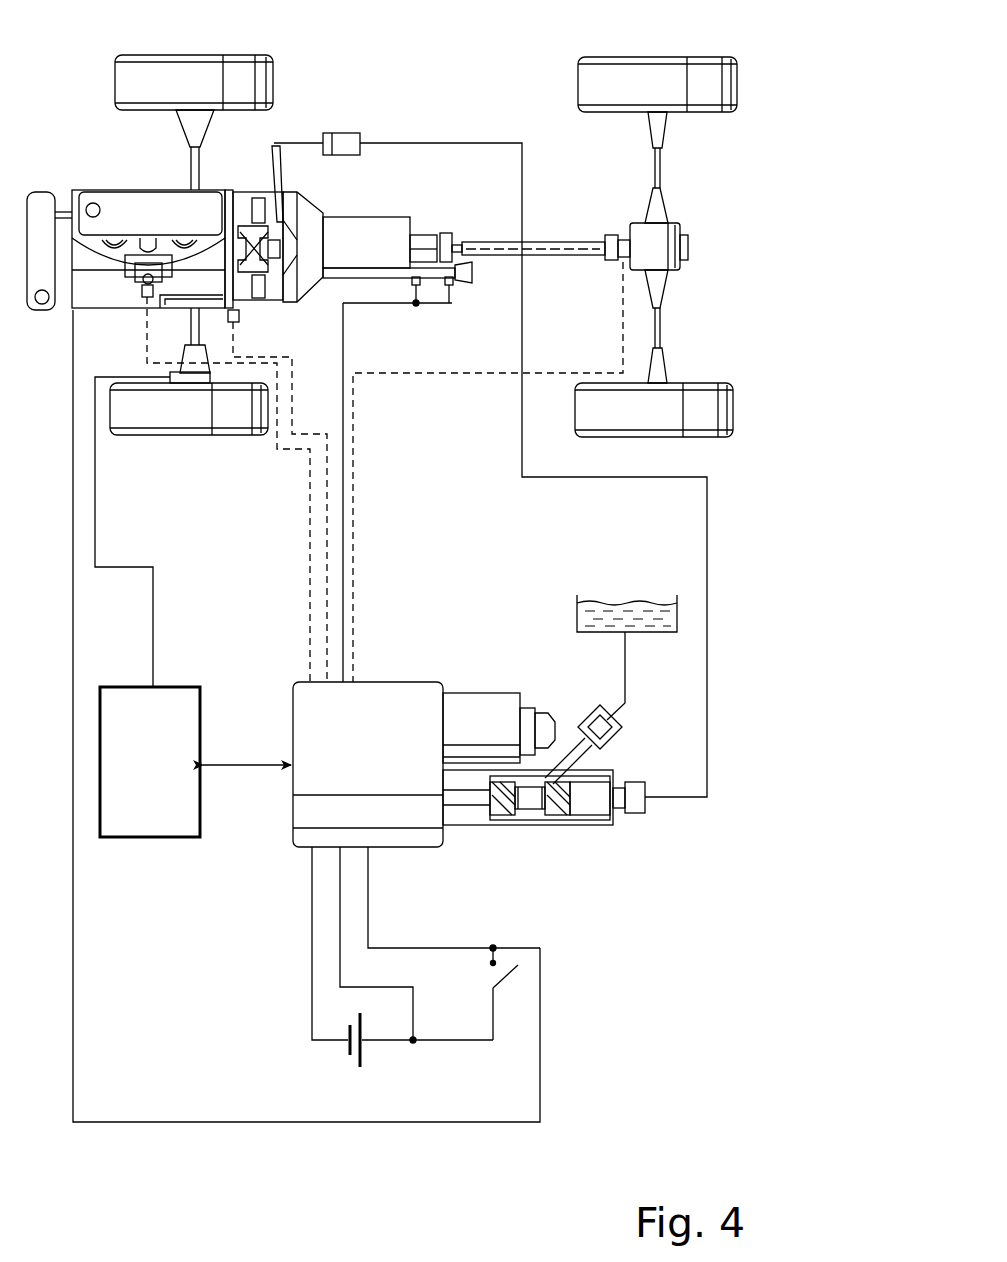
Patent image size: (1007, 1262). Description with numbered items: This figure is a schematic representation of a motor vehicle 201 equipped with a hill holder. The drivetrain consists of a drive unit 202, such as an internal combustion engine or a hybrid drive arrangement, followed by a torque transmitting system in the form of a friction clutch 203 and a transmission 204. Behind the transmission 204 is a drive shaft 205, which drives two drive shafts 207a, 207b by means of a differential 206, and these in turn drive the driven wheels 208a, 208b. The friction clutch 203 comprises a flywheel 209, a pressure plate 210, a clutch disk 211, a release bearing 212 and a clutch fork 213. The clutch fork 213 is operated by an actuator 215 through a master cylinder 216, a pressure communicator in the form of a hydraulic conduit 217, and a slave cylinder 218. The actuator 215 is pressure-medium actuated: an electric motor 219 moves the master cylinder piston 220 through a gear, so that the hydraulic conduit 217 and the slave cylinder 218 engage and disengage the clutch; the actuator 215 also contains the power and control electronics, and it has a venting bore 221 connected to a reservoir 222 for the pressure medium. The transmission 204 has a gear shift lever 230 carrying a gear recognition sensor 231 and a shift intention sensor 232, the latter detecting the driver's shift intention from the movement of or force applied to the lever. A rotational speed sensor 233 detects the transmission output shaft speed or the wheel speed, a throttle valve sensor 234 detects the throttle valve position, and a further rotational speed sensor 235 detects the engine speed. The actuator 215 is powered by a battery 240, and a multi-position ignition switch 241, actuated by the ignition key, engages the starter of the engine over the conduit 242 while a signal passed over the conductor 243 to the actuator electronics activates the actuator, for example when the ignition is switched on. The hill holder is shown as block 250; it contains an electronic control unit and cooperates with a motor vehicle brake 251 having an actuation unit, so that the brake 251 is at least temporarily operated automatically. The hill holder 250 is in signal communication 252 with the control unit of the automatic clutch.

The motor vehicle 201 is at (452, 74).
The drive unit 202 is at (116, 200).
The clutch 203 is at (236, 184).
The transmission 204 is at (393, 256).
The drive shaft 205 is at (568, 243).
The differential 206 is at (690, 251).
The drive shaft 207a is at (662, 178).
The drive shaft 207b is at (662, 338).
The driven wheel 208a is at (720, 92).
The driven wheel 208b is at (715, 412).
The flywheel 209 is at (238, 323).
The pressure plate 210 is at (265, 300).
The clutch disk 211 is at (258, 222).
The release bearing 212 is at (281, 256).
The clutch fork 213 is at (282, 178).
The actuator 215 is at (397, 759).
The master cylinder 216 is at (556, 773).
The hydraulic conduit 217 is at (708, 525).
The slave cylinder 218 is at (348, 133).
The electric motor 219 is at (478, 700).
The master cylinder piston 220 is at (572, 790).
The venting bore 221 is at (592, 720).
The reservoir 222 is at (623, 612).
The gear shift lever 230 is at (466, 280).
The gear recognition sensor 231 is at (412, 287).
The shift intention sensor 232 is at (452, 287).
The rotational speed sensor 233 is at (622, 268).
The throttle valve sensor 234 is at (143, 298).
The rotational speed sensor 235 is at (215, 395).
The battery 240 is at (346, 1058).
The ignition switch 241 is at (488, 968).
The conduit 242 is at (541, 1070).
The conductor 243 is at (430, 948).
The hill holder 250 is at (177, 764).
The motor vehicle brake 251 is at (185, 383).
The signal communication 252 is at (250, 765).